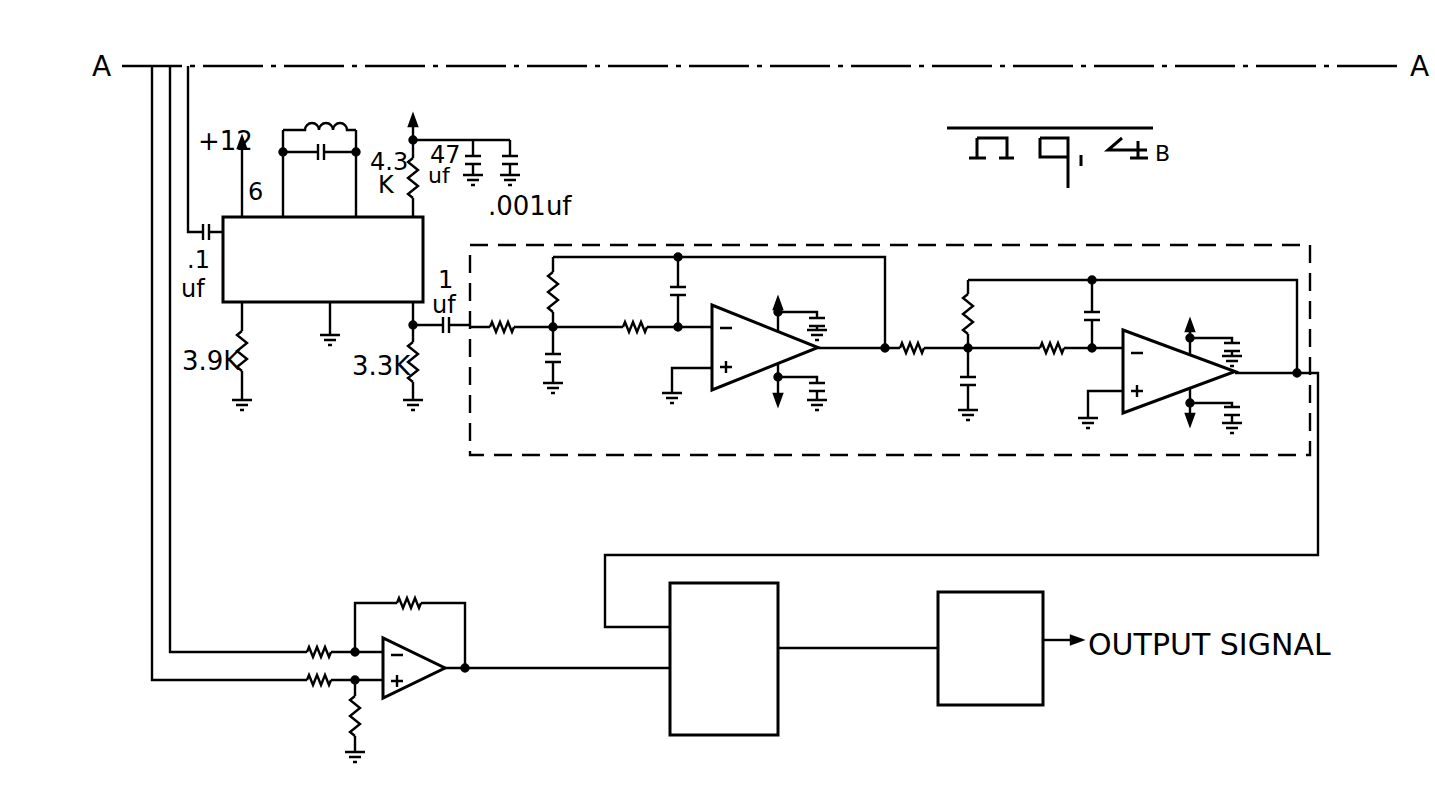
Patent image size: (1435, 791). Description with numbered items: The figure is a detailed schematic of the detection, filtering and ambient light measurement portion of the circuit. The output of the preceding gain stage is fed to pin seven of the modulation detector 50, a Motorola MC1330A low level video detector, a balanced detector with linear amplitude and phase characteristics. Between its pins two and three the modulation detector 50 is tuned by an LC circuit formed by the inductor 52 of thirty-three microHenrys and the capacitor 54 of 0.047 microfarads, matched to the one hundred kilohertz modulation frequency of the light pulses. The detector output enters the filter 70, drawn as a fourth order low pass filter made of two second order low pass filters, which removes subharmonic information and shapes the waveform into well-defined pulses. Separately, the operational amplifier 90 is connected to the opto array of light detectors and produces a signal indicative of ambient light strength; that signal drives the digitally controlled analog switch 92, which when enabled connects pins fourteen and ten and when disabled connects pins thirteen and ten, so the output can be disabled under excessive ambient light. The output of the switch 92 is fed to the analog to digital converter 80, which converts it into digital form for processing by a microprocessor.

The modulation detector 50 is at (292, 304).
The inductor 52 is at (307, 120).
The capacitor 54 is at (313, 148).
The filter 70 is at (648, 455).
The analog to digital converter 80 is at (985, 700).
The operational amplifier 90 is at (407, 690).
The digitally controlled analog switch 92 is at (670, 717).